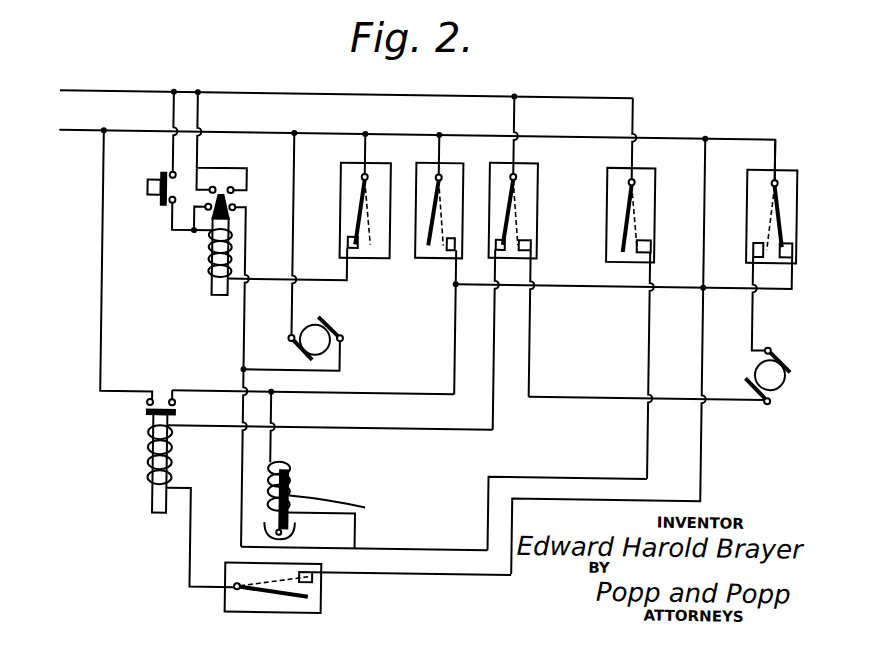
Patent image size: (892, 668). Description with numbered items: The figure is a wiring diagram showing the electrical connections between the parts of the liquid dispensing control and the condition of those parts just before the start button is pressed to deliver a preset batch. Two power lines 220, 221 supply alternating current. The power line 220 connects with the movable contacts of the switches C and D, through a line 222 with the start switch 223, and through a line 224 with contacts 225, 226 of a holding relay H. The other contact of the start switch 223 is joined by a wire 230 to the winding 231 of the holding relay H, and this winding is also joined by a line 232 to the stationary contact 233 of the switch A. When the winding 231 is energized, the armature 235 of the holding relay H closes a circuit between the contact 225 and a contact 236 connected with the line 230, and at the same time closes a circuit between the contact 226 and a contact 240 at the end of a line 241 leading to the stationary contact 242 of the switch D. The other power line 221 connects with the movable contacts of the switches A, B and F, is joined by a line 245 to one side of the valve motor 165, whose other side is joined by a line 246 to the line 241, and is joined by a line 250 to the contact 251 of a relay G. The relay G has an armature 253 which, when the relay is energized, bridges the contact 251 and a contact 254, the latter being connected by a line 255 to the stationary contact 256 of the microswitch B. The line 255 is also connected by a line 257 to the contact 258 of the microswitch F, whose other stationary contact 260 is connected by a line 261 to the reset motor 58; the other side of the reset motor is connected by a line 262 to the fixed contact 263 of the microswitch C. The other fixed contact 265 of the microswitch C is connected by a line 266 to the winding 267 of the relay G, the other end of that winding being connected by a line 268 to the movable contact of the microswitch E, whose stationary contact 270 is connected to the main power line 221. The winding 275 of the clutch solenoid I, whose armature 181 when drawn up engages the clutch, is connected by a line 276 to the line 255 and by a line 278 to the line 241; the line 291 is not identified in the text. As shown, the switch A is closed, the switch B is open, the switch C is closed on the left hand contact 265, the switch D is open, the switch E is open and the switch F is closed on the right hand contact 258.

The power line 220 is at (78, 94).
The power line 221 is at (66, 135).
The line 222 is at (170, 108).
The start switch 223 is at (158, 200).
The line 224 is at (198, 108).
The contact 225 is at (212, 189).
The contact 226 is at (230, 189).
The wire 230 is at (175, 236).
The winding 231 is at (232, 250).
The line 232 is at (312, 280).
The stationary contact 233 is at (347, 244).
The armature 235 is at (221, 299).
The contact 236 is at (203, 210).
The contact 240 is at (236, 208).
The line 241 is at (590, 476).
The stationary contact 242 is at (652, 243).
The line 245 is at (290, 316).
The line 246 is at (332, 372).
The line 250 is at (100, 342).
The contact 251 is at (147, 406).
The armature 253 is at (155, 507).
The contact 254 is at (177, 406).
The line 255 is at (376, 396).
The stationary contact 256 is at (453, 262).
The line 257 is at (571, 286).
The contact 258 is at (784, 262).
The stationary contact 260 is at (755, 246).
The line 261 is at (752, 325).
The line 262 is at (618, 395).
The fixed contact 263 is at (528, 243).
The fixed contact 265 is at (500, 255).
The line 266 is at (495, 424).
The winding 267 is at (174, 462).
The line 268 is at (193, 552).
The stationary contact 270 is at (330, 589).
The winding 275 is at (335, 491).
The line 276 is at (274, 410).
The line 278 is at (360, 534).
The conductor 291 is at (243, 503).
The valve motor 165 is at (328, 326).
The reset motor 58 is at (757, 372).
The armature 181 is at (310, 509).
The switch A is at (381, 170).
The microswitch B is at (453, 168).
The microswitch C is at (528, 168).
The switch D is at (647, 162).
The microswitch E is at (354, 588).
The microswitch F is at (786, 172).
The relay G is at (150, 480).
The holding relay H is at (212, 276).
The solenoid I is at (290, 475).